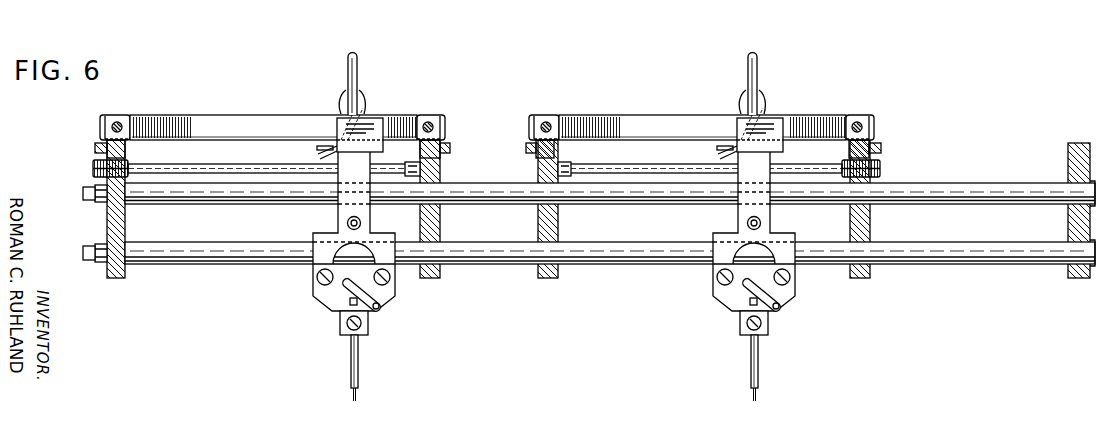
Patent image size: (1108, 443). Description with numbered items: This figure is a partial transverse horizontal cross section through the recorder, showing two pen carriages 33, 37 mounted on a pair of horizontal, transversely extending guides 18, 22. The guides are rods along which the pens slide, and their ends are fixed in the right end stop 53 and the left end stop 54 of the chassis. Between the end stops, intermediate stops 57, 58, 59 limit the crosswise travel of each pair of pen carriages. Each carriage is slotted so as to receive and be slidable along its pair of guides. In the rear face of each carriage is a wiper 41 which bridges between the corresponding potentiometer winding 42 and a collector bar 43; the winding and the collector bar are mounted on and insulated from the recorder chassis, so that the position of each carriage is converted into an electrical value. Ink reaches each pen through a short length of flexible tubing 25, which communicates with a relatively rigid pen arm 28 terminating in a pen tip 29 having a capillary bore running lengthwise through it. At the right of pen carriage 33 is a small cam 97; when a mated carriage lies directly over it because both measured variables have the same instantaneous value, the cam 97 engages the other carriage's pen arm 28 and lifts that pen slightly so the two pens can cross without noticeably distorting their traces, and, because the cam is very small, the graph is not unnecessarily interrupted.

The guide 18 is at (491, 189).
The guide 22 is at (503, 255).
The flexible tubing 25 is at (358, 65).
The pen arm 28 is at (358, 362).
The pen tip 29 is at (358, 396).
The pen carriage 33 is at (318, 300).
The pen carriage 37 is at (722, 298).
The wiper 41 is at (380, 118).
The potentiometer winding 42 is at (233, 118).
The collector bar 43 is at (221, 167).
The right end stop 53 is at (1068, 220).
The left end stop 54 is at (107, 221).
The intermediate stop 57 is at (440, 220).
The intermediate stop 58 is at (559, 220).
The intermediate stop 59 is at (870, 220).
The cam 97 is at (346, 306).